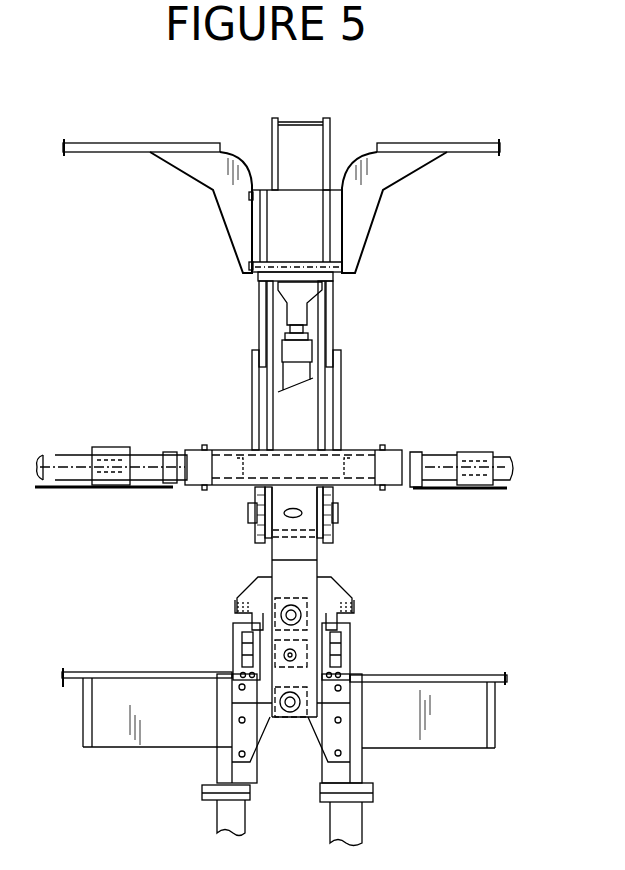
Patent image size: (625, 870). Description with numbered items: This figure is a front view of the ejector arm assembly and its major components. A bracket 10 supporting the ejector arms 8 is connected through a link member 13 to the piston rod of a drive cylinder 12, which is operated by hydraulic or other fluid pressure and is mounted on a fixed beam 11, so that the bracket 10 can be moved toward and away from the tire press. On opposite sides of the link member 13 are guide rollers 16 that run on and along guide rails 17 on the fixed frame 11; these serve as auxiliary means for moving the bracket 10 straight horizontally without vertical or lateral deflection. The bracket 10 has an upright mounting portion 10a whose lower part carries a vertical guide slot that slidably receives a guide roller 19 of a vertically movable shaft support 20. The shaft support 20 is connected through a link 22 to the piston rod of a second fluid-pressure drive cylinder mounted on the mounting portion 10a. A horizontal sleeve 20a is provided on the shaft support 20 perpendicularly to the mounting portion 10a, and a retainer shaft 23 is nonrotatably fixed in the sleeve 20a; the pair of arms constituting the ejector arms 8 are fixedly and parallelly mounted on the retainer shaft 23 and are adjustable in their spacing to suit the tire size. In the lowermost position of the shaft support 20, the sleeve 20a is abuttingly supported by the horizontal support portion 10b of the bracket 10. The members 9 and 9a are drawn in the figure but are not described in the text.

The ejector arms 8 is at (108, 447).
The support bracket 9 is at (195, 184).
The housing block 9a is at (305, 235).
The bracket 10 is at (330, 148).
The upright mounting portion 10a is at (307, 303).
The horizontal support portion 10b is at (300, 492).
The fixed beam 11 is at (360, 718).
The drive cylinder 12 is at (330, 648).
The link member 13 is at (287, 582).
The guide rollers 16 is at (238, 627).
The guide rails 17 is at (250, 653).
The guide roller 19 is at (248, 512).
The shaft support 20 is at (252, 413).
The horizontal sleeve 20a is at (293, 448).
The link 22 is at (258, 307).
The retainer shaft 23 is at (150, 467).